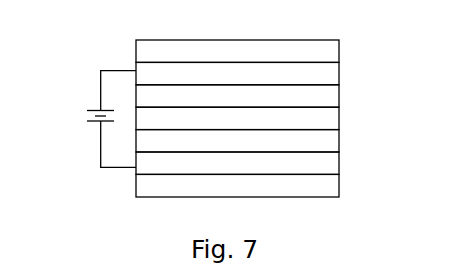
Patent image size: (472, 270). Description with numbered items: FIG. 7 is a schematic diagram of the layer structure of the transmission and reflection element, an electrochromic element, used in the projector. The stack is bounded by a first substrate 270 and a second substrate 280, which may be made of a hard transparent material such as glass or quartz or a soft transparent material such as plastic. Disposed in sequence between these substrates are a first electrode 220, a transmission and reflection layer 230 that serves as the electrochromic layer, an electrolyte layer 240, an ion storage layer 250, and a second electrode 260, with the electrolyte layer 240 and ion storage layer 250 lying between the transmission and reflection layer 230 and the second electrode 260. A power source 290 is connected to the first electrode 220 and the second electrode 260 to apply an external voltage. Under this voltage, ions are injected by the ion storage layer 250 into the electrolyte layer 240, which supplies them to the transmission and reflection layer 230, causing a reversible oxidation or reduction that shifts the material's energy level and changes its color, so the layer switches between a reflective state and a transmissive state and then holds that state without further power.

The first substrate 270 is at (273, 44).
The first electrode 220 is at (273, 67).
The transmission and reflection layer 230 is at (273, 90).
The electrolyte layer 240 is at (273, 113).
The ion storage layer 250 is at (273, 136).
The second electrode 260 is at (273, 159).
The second substrate 280 is at (273, 182).
The power source 290 is at (86, 119).